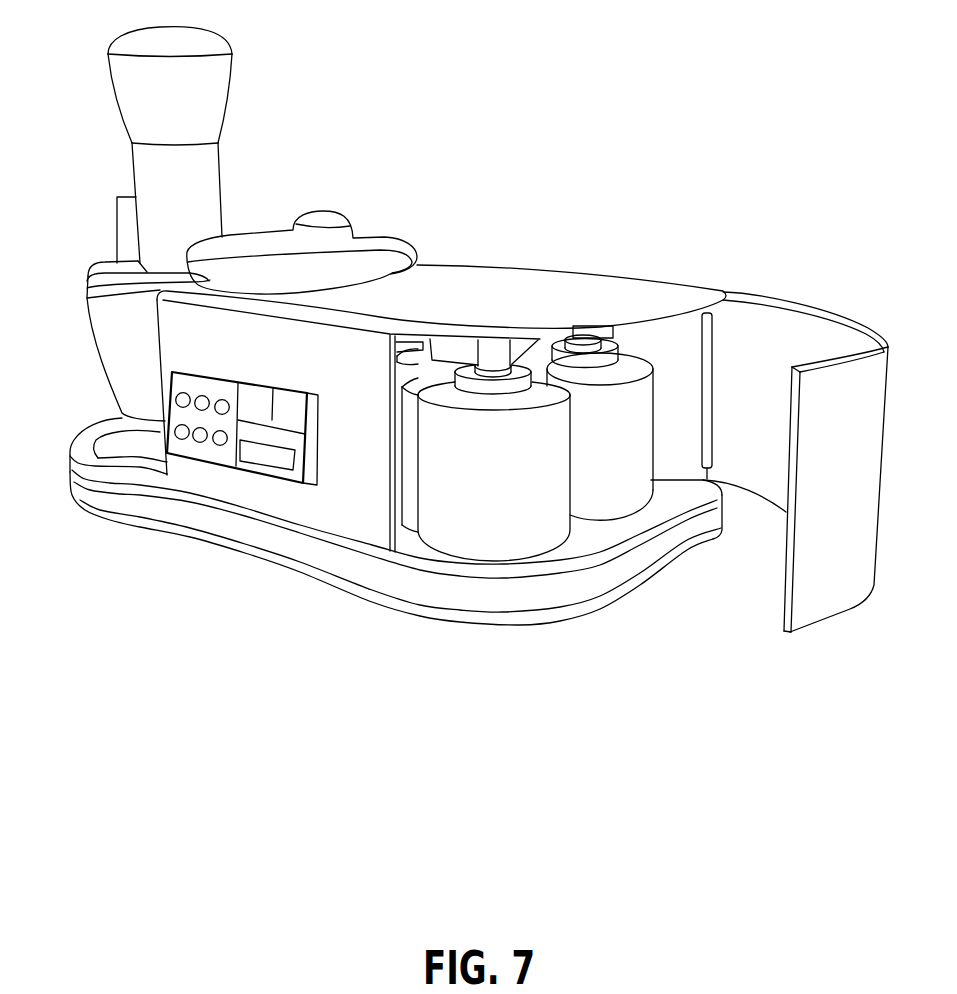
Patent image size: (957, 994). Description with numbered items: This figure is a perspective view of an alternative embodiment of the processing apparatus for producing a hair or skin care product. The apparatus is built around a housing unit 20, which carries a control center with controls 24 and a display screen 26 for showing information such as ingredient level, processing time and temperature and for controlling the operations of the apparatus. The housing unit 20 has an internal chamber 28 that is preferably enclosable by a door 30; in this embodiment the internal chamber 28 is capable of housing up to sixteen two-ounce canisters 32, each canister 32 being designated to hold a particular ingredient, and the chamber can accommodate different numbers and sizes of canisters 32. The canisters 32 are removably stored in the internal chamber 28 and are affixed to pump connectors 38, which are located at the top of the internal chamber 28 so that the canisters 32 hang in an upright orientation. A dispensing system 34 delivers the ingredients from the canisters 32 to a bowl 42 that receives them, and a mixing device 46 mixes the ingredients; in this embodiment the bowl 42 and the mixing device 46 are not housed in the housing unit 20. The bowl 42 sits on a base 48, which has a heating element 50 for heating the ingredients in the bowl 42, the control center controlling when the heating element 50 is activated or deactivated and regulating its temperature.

The housing unit 20 is at (537, 270).
The controls 24 is at (190, 453).
The display screen 26 is at (268, 472).
The internal chamber 28 is at (687, 348).
The door 30 is at (873, 328).
The canisters 32 is at (570, 460).
The dispensing system 34 is at (323, 207).
The pump connectors 38 is at (462, 352).
The bowl 42 is at (100, 358).
The mixing device 46 is at (233, 97).
The base 48 is at (243, 560).
The heating element 50 is at (573, 590).